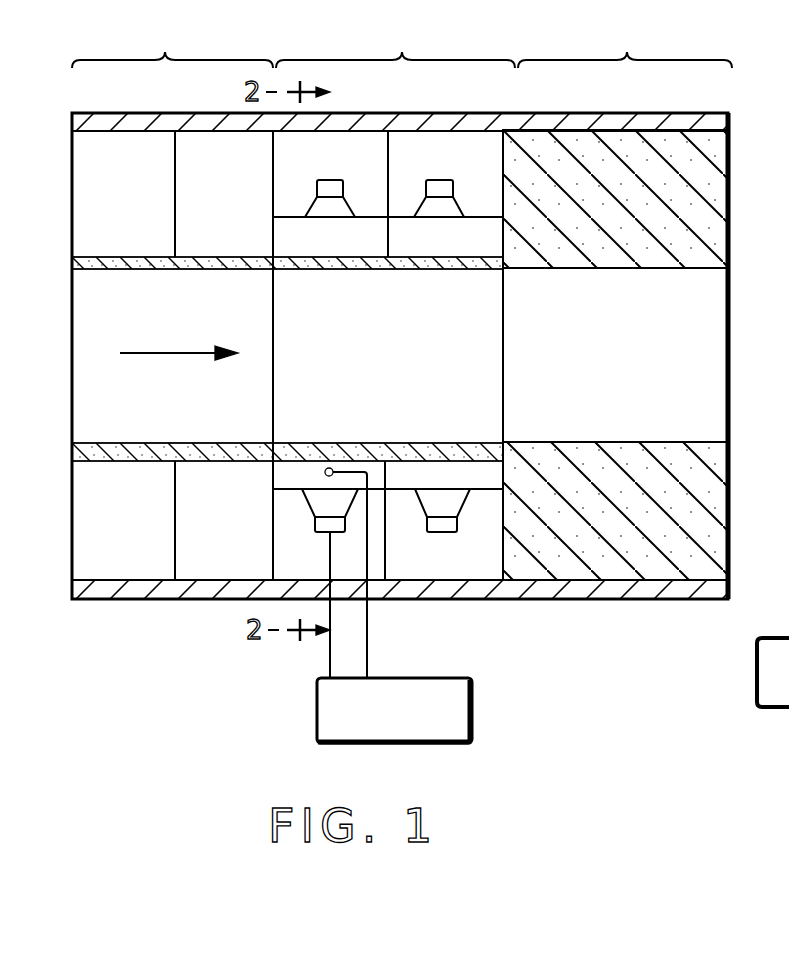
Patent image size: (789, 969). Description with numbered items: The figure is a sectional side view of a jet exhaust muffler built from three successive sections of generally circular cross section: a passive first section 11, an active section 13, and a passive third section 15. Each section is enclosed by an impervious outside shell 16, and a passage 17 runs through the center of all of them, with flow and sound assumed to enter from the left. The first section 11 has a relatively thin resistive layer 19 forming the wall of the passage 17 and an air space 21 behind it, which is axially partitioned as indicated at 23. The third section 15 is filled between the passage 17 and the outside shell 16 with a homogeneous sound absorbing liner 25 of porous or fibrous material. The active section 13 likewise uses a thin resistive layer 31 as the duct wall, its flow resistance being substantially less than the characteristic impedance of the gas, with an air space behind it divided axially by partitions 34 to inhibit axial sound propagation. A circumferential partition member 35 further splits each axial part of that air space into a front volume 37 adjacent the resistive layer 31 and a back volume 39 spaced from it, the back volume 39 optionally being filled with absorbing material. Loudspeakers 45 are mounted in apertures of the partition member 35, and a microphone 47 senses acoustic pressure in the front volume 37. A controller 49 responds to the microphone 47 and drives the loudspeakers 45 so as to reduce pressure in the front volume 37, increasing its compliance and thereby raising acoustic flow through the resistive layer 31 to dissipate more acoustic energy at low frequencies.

The first section 11 is at (172, 41).
The active section 13 is at (395, 41).
The third section 15 is at (625, 41).
The outside shell 16 is at (705, 114).
The passage 17 is at (97, 309).
The resistive layer 19 is at (131, 462).
The air space 21 is at (123, 194).
The axial partition 23 is at (176, 212).
The sound absorbing liner 25 is at (714, 173).
The resistive layer 31 is at (333, 270).
The axial partition 34 is at (390, 240).
The circumferential partition member 35 is at (368, 214).
The front volume 37 is at (445, 237).
The back volume 39 is at (389, 180).
The loudspeakers 45 is at (324, 533).
The microphone 47 is at (331, 467).
The controller 49 is at (394, 710).